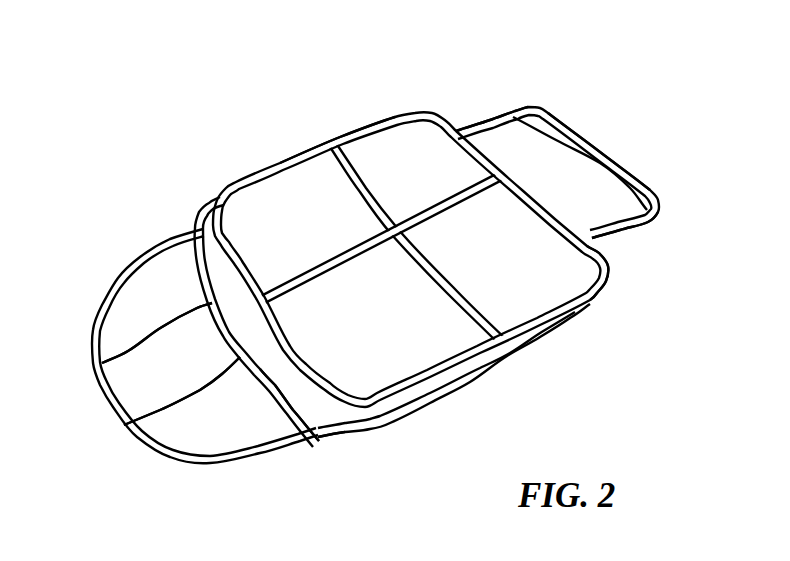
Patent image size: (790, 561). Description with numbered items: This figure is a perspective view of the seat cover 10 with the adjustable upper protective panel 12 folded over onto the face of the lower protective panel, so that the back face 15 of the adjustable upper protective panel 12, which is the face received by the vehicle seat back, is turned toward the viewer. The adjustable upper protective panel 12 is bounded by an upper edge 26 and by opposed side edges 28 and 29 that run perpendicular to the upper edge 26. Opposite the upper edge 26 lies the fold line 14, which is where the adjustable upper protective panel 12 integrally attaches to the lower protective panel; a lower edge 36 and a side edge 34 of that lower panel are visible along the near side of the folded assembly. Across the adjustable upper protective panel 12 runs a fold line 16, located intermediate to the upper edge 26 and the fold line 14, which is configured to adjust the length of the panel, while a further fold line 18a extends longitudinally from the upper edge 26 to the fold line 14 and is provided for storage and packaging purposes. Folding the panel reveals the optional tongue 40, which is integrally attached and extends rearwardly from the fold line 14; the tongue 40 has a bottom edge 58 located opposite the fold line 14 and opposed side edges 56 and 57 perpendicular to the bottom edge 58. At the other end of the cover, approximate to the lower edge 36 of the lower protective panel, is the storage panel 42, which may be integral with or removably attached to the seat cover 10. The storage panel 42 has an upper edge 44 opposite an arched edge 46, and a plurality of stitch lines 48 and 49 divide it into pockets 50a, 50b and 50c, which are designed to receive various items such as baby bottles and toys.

The seat cover 10 is at (403, 104).
The adjustable upper protective panel 12 is at (250, 214).
The fold line 14 is at (487, 142).
The back face 15 is at (530, 277).
The fold line 16 is at (336, 160).
The fold line 18a is at (330, 267).
The upper edge 26 is at (303, 370).
The side edge 28 is at (472, 363).
The side edge 29 is at (277, 163).
The side edge 34 is at (453, 393).
The lower edge 36 is at (319, 410).
The tongue 40 is at (546, 160).
The storage panel 42 is at (290, 390).
The upper edge 44 is at (190, 257).
The arched edge 46 is at (150, 447).
The stitch line 48 is at (130, 435).
The stitch line 49 is at (120, 353).
The pocket 50a is at (210, 423).
The pocket 50b is at (147, 382).
The pocket 50c is at (140, 308).
The side edge 56 is at (641, 228).
The side edge 57 is at (513, 107).
The bottom edge 58 is at (607, 152).